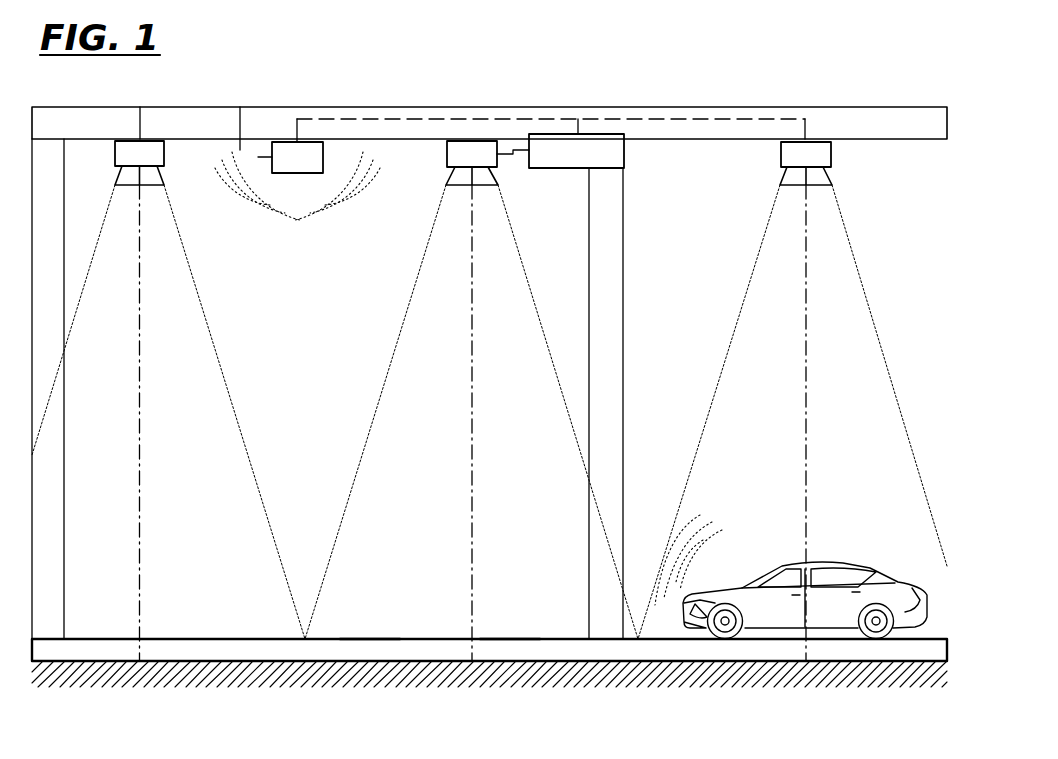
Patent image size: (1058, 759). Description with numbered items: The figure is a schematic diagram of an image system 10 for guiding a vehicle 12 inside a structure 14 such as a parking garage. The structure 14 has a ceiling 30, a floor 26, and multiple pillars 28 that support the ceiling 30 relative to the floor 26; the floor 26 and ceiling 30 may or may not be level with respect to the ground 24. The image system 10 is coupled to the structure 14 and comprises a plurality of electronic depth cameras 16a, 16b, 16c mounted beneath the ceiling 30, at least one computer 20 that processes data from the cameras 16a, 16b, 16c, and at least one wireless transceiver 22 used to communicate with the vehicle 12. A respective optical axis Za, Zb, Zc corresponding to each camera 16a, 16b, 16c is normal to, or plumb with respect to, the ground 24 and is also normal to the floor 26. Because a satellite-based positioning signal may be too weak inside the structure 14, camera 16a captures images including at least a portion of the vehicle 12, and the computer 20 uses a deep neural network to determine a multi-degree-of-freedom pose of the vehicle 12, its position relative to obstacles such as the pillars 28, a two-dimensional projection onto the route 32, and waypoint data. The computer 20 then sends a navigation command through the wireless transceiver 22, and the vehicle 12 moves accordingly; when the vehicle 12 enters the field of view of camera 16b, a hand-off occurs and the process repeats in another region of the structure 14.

The image system 10 is at (677, 246).
The vehicle 12 is at (841, 557).
The structure 14 is at (898, 107).
The electronic depth camera 16a is at (834, 157).
The electronic depth camera 16b is at (444, 160).
The electronic depth camera 16c is at (113, 157).
The computer 20 is at (588, 161).
The wireless transceiver 22 is at (309, 167).
The ground 24 is at (190, 660).
The floor 26 is at (366, 638).
The pillar 28 is at (60, 400).
The ceiling 30 is at (682, 140).
The route 32 is at (502, 636).
The optical axis Za is at (806, 393).
The optical axis Zb is at (473, 393).
The optical axis Zc is at (140, 393).